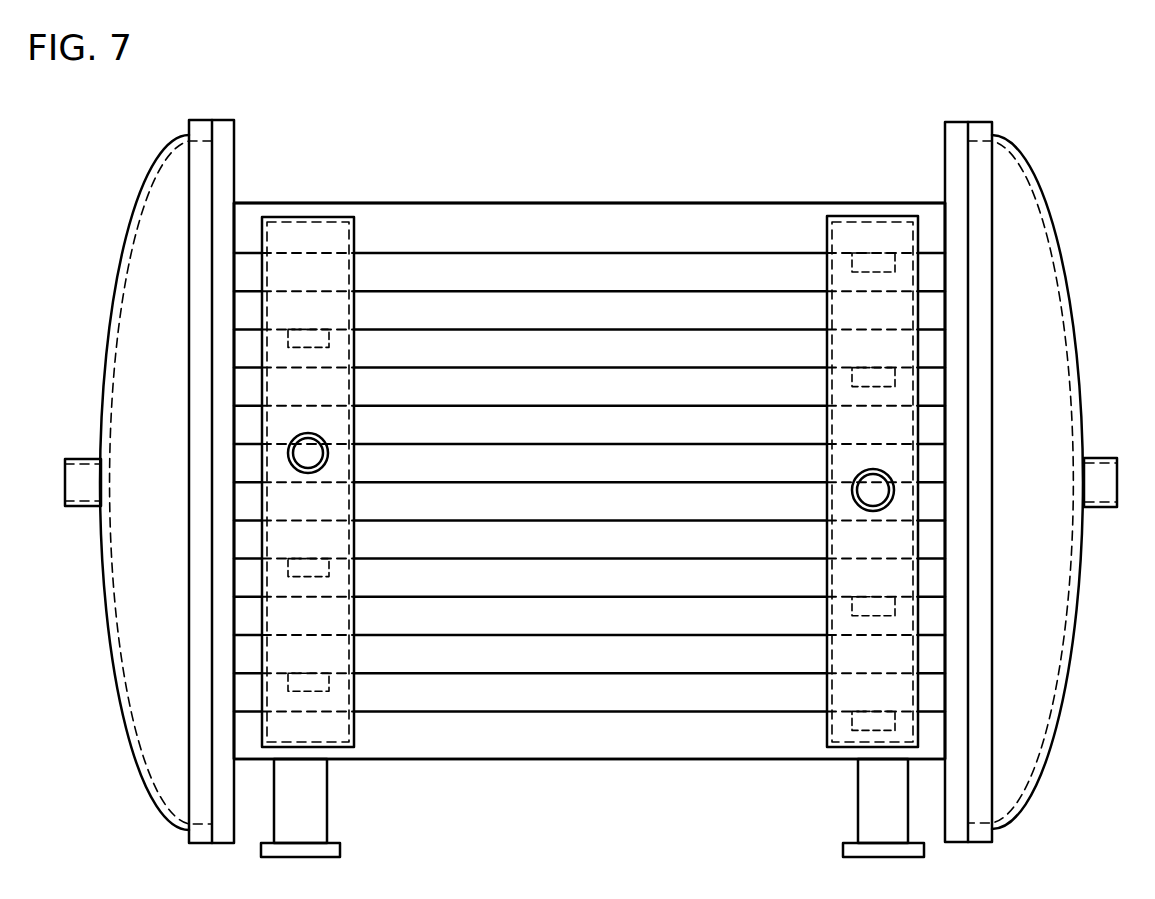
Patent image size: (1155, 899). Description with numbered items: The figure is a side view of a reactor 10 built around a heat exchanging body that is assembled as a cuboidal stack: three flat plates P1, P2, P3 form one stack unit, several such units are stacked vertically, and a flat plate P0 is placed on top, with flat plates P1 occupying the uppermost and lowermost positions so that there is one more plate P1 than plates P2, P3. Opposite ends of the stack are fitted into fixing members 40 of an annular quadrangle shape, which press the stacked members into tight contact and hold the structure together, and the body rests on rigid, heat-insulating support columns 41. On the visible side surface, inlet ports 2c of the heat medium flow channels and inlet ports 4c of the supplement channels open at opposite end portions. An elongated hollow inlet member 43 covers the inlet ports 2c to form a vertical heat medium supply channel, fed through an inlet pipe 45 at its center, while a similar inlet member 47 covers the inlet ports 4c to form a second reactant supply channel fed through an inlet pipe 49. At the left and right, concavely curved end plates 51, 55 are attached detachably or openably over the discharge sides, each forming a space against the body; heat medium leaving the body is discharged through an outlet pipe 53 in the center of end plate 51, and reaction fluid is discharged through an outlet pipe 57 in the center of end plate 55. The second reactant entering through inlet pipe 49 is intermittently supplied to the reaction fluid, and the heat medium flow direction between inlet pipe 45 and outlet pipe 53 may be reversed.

The reactor 10 is at (745, 126).
The fixing member 40 is at (228, 148).
The support column 41 is at (327, 806).
The inlet member 43 is at (870, 215).
The inlet pipe 45 is at (852, 490).
The inlet member 47 is at (305, 216).
The inlet pipe 49 is at (328, 455).
The end plate 51 is at (129, 226).
The outlet pipe 53 is at (80, 458).
The end plate 55 is at (1043, 227).
The outlet pipe 57 is at (1101, 457).
The inlet port of heat medium flow channel 2c is at (870, 269).
The inlet port of supplement channel 4c is at (305, 349).
The flat plate P0 is at (640, 212).
The flat plate P1 is at (633, 259).
The flat plate P2 is at (633, 297).
The flat plate P3 is at (633, 335).